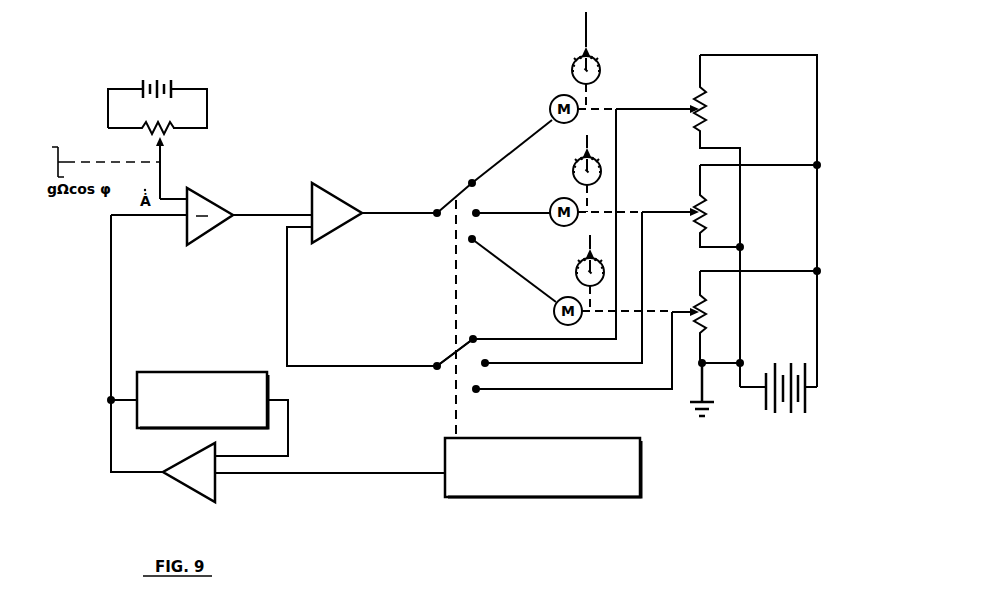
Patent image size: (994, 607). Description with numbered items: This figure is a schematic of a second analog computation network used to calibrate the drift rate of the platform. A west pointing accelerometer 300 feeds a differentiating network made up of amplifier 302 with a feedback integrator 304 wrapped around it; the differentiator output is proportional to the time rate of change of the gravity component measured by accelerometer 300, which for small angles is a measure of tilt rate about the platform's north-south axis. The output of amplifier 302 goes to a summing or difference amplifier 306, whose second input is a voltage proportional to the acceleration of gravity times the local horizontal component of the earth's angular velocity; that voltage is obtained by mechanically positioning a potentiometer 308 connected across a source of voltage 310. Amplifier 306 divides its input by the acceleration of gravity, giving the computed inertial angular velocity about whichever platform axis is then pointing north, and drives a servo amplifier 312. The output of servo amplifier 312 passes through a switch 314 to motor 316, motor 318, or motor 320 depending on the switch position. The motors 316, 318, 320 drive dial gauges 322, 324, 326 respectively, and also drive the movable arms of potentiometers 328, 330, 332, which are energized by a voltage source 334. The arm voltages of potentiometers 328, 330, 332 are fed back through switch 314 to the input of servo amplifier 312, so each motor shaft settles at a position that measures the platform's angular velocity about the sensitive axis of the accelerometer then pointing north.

The accelerometer 300 is at (628, 476).
The amplifier 302 is at (207, 478).
The feedback integrator 304 is at (185, 415).
The summing or difference amplifier 306 is at (208, 208).
The potentiometer 308 is at (172, 136).
The source of voltage 310 is at (153, 87).
The servo amplifier 312 is at (333, 207).
The switch 314 is at (453, 187).
The motor 316 is at (556, 100).
The motor 318 is at (553, 200).
The motor 320 is at (560, 298).
The dial gauge 322 is at (600, 66).
The dial gauge 324 is at (573, 163).
The dial gauge 326 is at (580, 262).
The potentiometer 328 is at (705, 107).
The potentiometer 330 is at (703, 210).
The potentiometer 332 is at (706, 303).
The voltage source 334 is at (766, 406).